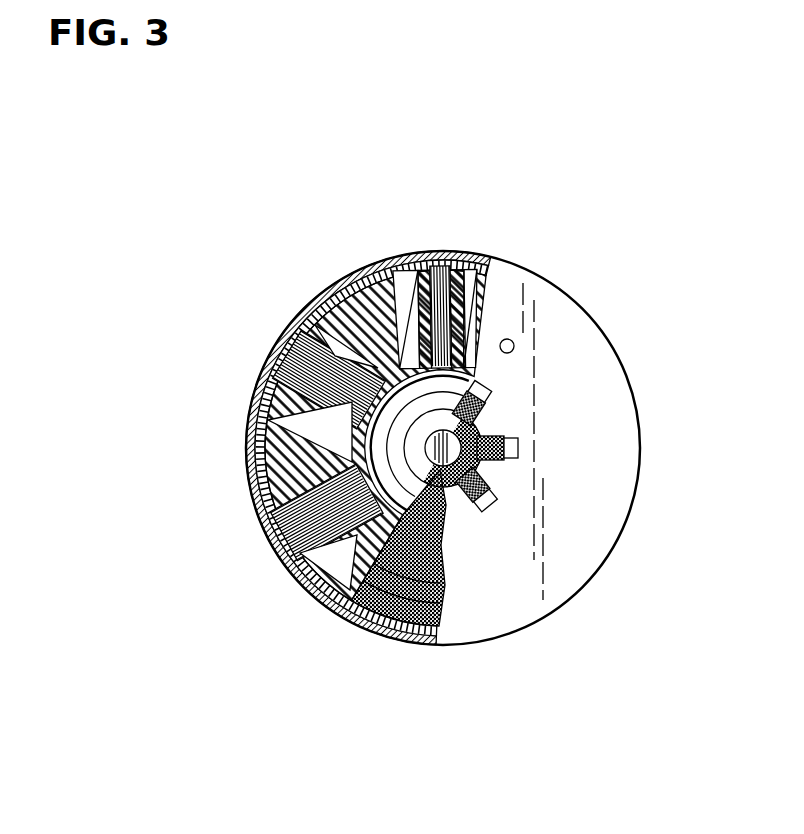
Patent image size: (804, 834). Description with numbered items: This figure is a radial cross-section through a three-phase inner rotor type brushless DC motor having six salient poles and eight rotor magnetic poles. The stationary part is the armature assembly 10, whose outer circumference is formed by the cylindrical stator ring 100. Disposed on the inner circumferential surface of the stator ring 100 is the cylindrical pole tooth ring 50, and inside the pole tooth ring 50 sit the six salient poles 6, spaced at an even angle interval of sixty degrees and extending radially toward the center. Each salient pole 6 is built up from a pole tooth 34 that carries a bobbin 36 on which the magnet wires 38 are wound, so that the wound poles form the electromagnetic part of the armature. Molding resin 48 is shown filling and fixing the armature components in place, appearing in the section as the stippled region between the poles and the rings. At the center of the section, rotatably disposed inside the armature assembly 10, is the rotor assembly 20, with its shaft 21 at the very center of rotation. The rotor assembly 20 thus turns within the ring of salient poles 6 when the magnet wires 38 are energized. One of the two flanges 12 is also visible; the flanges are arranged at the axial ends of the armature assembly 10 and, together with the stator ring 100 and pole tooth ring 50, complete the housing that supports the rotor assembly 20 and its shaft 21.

The salient poles 6 is at (309, 463).
The armature assembly 10 is at (420, 436).
The flange 12 is at (563, 347).
The rotor assembly 20 is at (403, 413).
The shaft 21 is at (477, 460).
The pole teeth 34 is at (318, 381).
The bobbins 36 is at (303, 327).
The magnet wires 38 is at (330, 345).
The molding resin 48 is at (347, 305).
The cylindrical pole tooth ring 50 is at (410, 257).
The cylindrical stator ring 100 is at (365, 612).